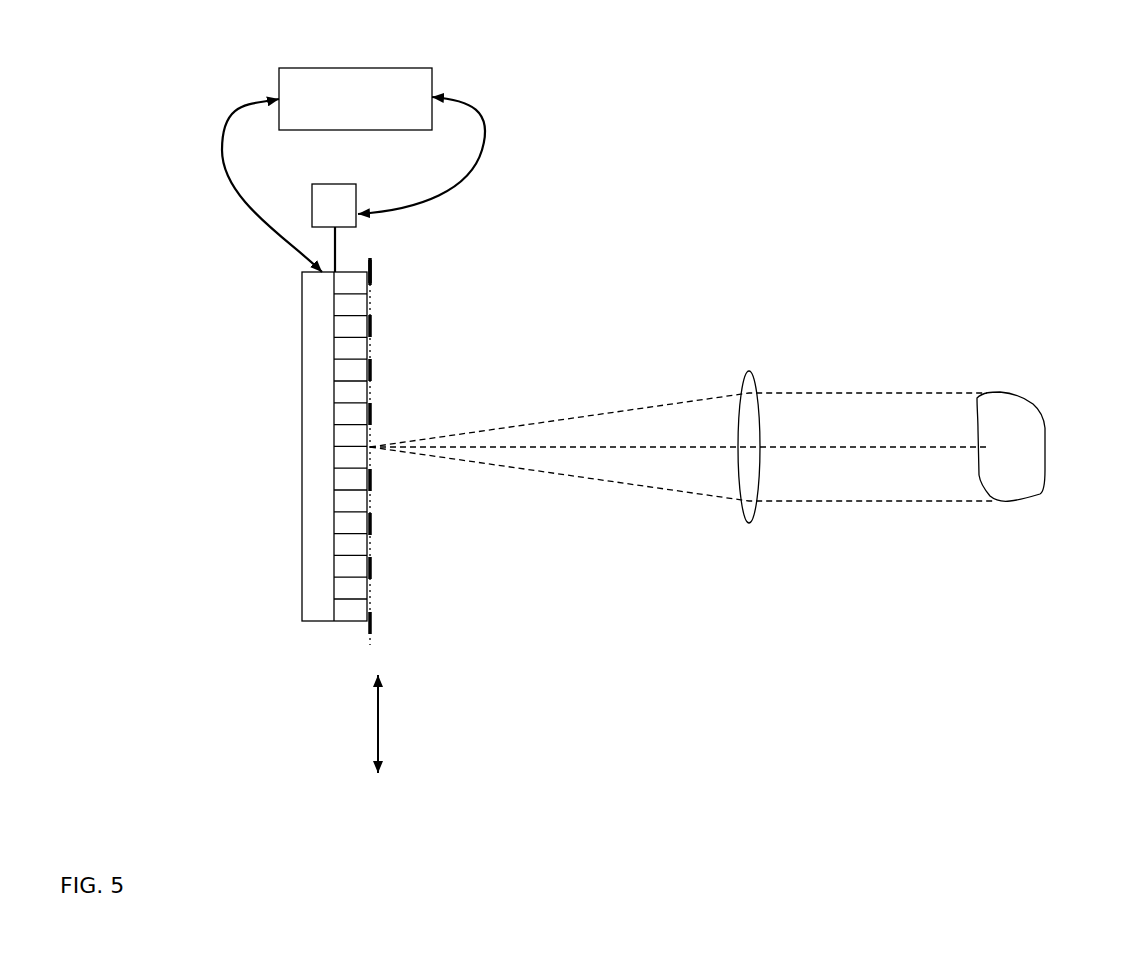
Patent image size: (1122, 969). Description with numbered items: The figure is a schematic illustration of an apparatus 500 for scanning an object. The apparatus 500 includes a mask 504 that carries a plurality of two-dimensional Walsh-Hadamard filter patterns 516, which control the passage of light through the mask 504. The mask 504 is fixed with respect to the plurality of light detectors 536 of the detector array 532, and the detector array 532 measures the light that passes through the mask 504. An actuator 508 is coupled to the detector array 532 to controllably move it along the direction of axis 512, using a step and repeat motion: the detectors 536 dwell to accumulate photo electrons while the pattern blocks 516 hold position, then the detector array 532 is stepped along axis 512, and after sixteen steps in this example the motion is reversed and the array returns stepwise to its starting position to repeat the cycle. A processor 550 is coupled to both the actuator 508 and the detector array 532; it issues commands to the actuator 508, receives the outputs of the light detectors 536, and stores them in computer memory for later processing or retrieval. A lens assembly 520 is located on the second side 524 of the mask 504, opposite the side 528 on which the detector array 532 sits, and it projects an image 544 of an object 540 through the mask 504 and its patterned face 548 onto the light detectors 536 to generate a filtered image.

The apparatus 500 is at (193, 677).
The mask 504 is at (377, 403).
The actuator 508 is at (335, 183).
The axis 512 is at (378, 719).
The filter patterns 516 is at (378, 325).
The lens assembly 520 is at (750, 523).
The second side 524 is at (455, 545).
The input side 528 is at (225, 545).
The detector array 532 is at (302, 447).
The light detectors 536 is at (345, 303).
The object 540 is at (1036, 412).
The image 544 is at (847, 392).
The emitting surface 548 is at (370, 278).
The processor 550 is at (355, 68).